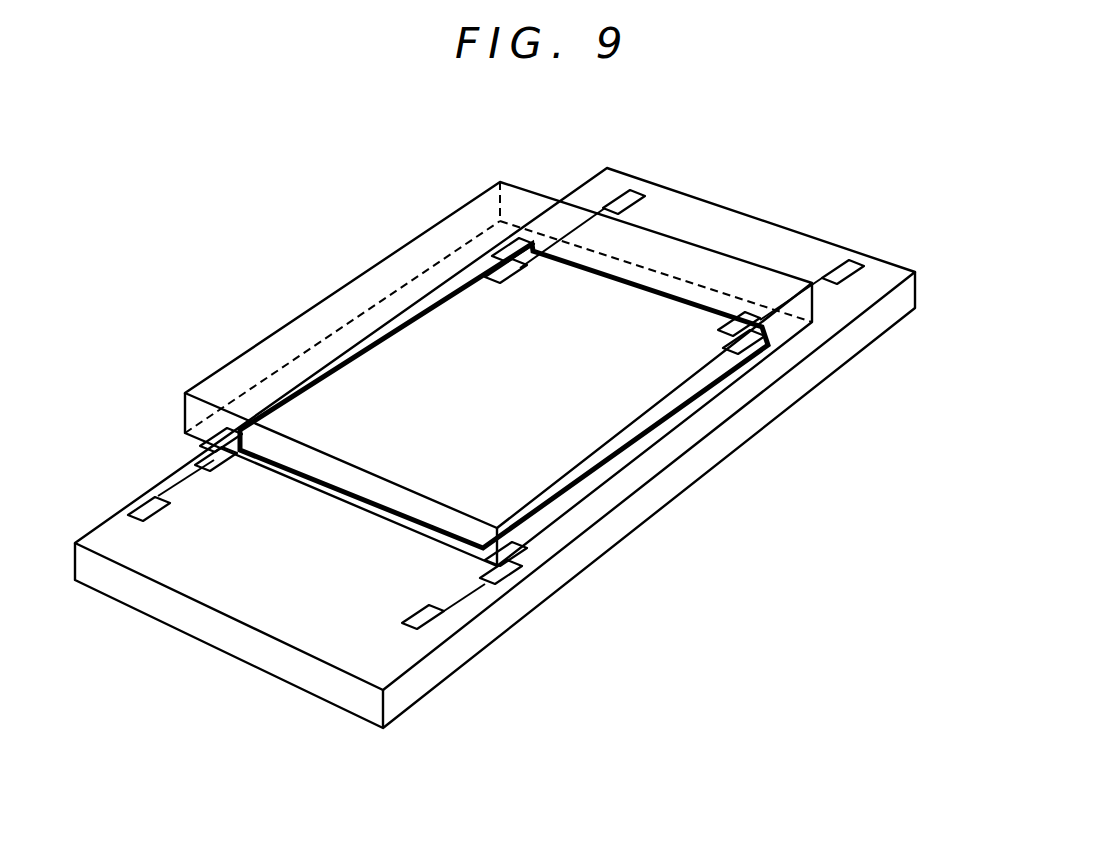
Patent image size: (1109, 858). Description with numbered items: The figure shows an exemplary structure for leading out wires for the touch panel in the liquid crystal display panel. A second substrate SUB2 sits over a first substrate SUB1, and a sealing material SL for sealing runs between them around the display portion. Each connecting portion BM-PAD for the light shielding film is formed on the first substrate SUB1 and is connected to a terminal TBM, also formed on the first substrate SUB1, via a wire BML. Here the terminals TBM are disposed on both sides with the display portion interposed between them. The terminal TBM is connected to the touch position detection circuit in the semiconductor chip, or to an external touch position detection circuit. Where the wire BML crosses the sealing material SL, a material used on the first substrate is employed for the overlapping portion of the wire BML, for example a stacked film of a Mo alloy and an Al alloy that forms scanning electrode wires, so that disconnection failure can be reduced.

The first substrate SUB1 is at (777, 405).
The second substrate SUB2 is at (792, 330).
The sealing material SL is at (632, 457).
The connecting portion for light shielding film BM-PAD is at (520, 572).
The wire BML is at (477, 593).
The terminal TBM is at (435, 623).